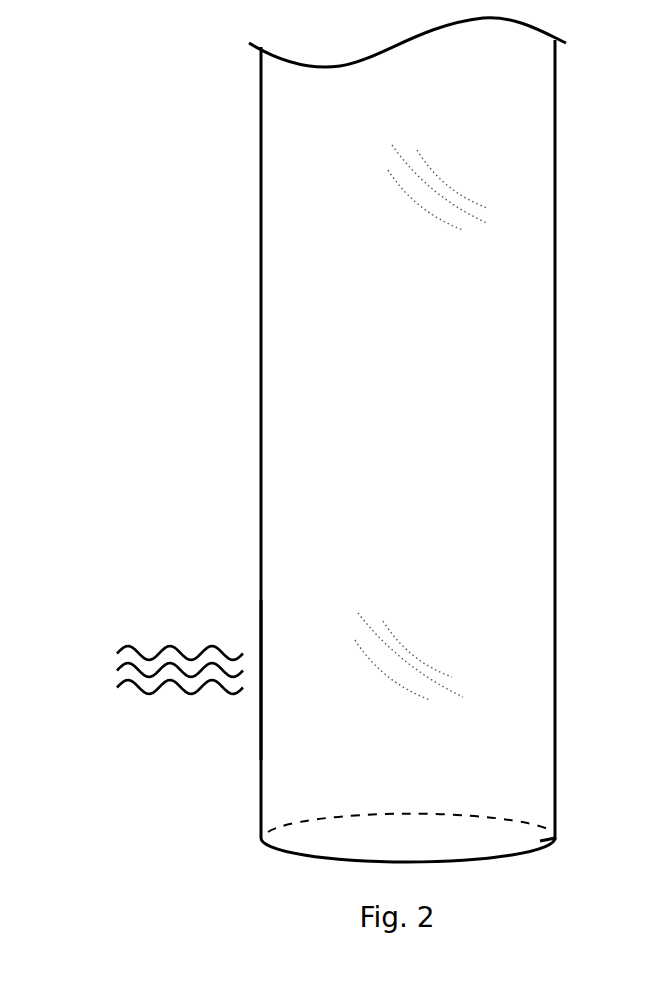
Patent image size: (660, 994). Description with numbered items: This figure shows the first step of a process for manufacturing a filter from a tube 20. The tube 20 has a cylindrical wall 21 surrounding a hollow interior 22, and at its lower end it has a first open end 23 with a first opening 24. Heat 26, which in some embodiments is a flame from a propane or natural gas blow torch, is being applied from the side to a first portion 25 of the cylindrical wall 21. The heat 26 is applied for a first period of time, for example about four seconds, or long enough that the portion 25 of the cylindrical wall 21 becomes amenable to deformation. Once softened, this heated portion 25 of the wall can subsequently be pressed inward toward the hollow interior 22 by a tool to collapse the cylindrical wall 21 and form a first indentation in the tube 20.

The tube 20 is at (398, 472).
The cylindrical wall 21 is at (557, 340).
The hollow interior 22 is at (477, 250).
The first open end 23 is at (562, 849).
The first opening 24 is at (512, 867).
The portion of the cylindrical wall 25 is at (248, 712).
The heat 26 is at (115, 718).